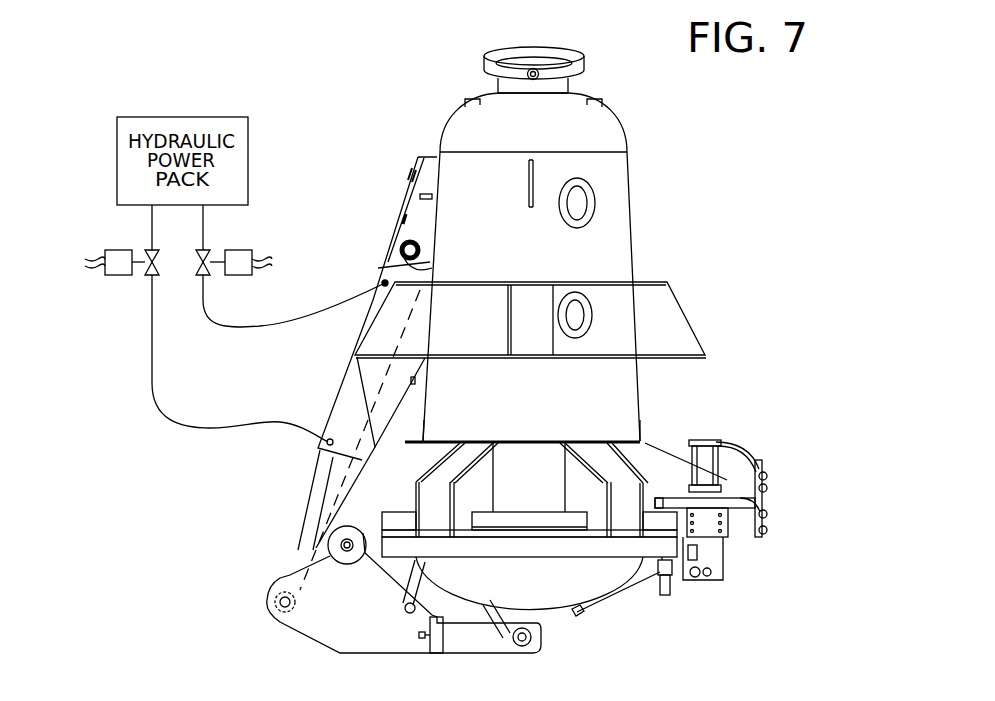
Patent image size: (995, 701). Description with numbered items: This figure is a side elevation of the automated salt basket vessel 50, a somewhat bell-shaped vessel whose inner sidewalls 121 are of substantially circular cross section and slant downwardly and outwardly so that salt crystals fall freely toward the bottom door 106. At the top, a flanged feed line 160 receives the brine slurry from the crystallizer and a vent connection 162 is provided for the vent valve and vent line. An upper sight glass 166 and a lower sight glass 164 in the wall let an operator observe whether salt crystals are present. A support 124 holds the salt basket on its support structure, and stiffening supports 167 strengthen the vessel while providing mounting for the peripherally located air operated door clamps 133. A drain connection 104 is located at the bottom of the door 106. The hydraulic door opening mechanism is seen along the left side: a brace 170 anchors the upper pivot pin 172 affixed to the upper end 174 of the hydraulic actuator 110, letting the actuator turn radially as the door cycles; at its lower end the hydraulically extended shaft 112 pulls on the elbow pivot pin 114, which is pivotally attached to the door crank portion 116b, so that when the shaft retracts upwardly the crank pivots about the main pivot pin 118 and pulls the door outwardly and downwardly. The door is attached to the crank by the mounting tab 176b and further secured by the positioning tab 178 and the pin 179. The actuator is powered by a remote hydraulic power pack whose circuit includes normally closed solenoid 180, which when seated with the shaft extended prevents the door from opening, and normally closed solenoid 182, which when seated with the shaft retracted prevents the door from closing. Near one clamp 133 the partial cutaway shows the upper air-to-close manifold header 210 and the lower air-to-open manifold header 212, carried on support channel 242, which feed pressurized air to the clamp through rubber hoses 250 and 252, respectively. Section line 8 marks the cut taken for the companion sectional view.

The section line 8- 8 is at (243, 700).
The salt basket vessel 50 is at (710, 141).
The drain connection 104 is at (540, 618).
The door 106 is at (620, 583).
The hydraulic actuator 110 is at (343, 386).
The hydraulically extended shaft 112 is at (316, 503).
The elbow pivot pin 114 is at (298, 600).
The door crank portion 116b is at (366, 650).
The main pivot pin 118 is at (330, 548).
The inner sidewalls 121 is at (425, 408).
The support 124 is at (673, 331).
The door clamp 133 is at (720, 442).
The flanged feed line 160 is at (495, 88).
The vent connection 162 is at (572, 88).
The lower sight glass 164 is at (580, 312).
The upper sight glass 166 is at (590, 203).
The stiffening supports 167 is at (666, 450).
The brace 170 is at (418, 203).
The upper pivot pin 172 is at (400, 253).
The upper end of actuator 174 is at (405, 262).
The mounting tab 176b is at (543, 640).
The positioning tab 178 is at (418, 614).
The pin 179 is at (405, 615).
The normally closed solenoid 180 is at (235, 250).
The normally closed solenoid 182 is at (118, 250).
The upper air-to-close manifold header 210 is at (767, 472).
The lower air-to-open manifold header 212 is at (767, 530).
The support channel 242 is at (767, 485).
The rubber hose 250 is at (745, 446).
The rubber hose 252 is at (767, 512).